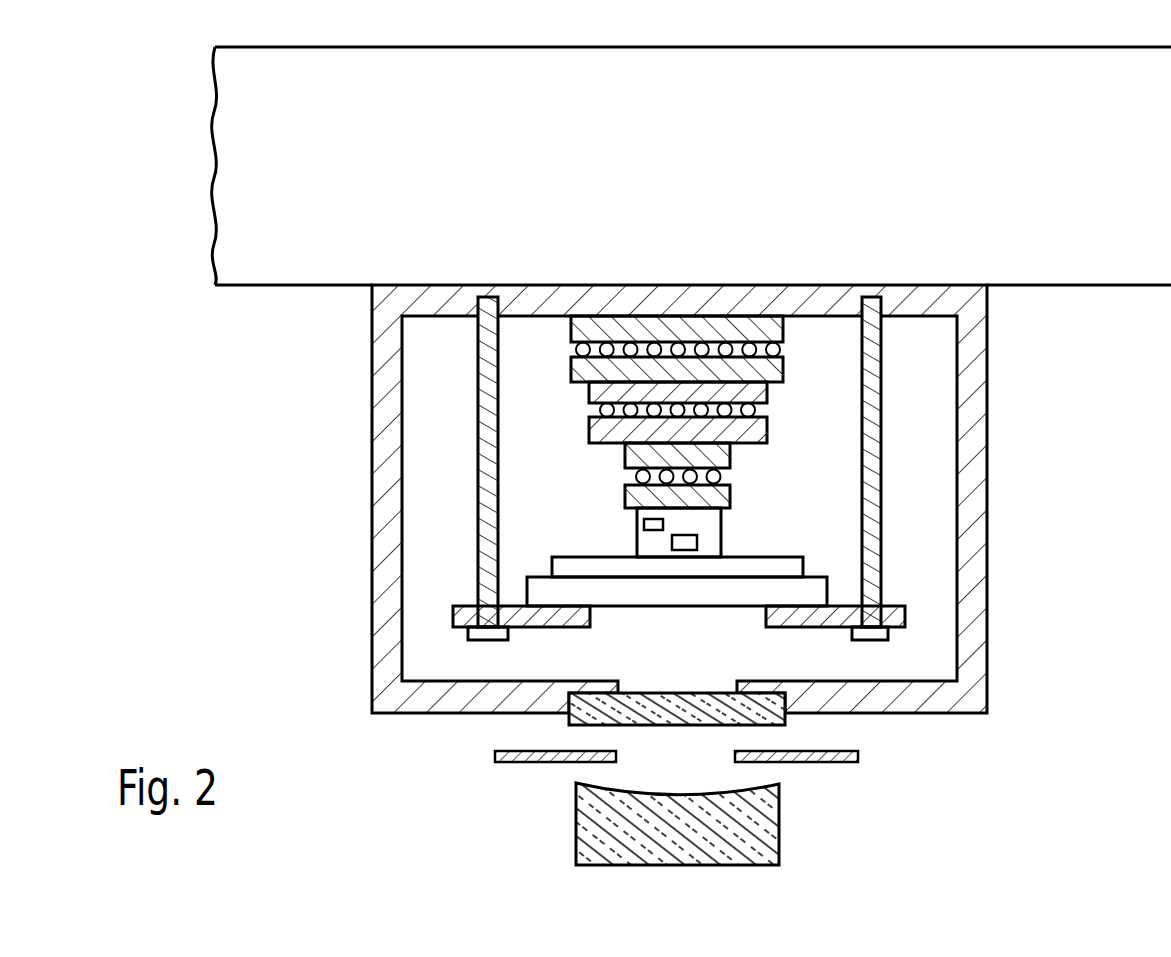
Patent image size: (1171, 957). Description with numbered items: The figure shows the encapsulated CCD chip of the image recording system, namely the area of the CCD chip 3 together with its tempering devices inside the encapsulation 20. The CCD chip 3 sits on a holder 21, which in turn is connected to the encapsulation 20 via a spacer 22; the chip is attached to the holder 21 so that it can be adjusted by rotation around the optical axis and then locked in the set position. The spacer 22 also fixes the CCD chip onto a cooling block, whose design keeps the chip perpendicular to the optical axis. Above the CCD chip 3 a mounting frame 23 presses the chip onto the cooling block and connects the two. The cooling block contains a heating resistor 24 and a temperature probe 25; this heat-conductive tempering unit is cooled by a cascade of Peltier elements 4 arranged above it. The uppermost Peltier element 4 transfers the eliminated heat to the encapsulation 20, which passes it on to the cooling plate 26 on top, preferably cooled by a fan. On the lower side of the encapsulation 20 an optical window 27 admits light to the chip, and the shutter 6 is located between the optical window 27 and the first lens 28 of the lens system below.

The cooling plate 26 is at (703, 184).
The encapsulation 20 is at (382, 543).
The spacer 22 is at (488, 409).
The Peltier elements 4 is at (810, 335).
The temperature probe 25 is at (645, 524).
The heating resistor 24 is at (697, 542).
The mounting frame 23 is at (795, 570).
The CCD chip 3 is at (651, 597).
The holder 21 is at (790, 620).
The optical window 27 is at (690, 712).
The shutter 6 is at (513, 753).
The first lens 28 is at (758, 822).